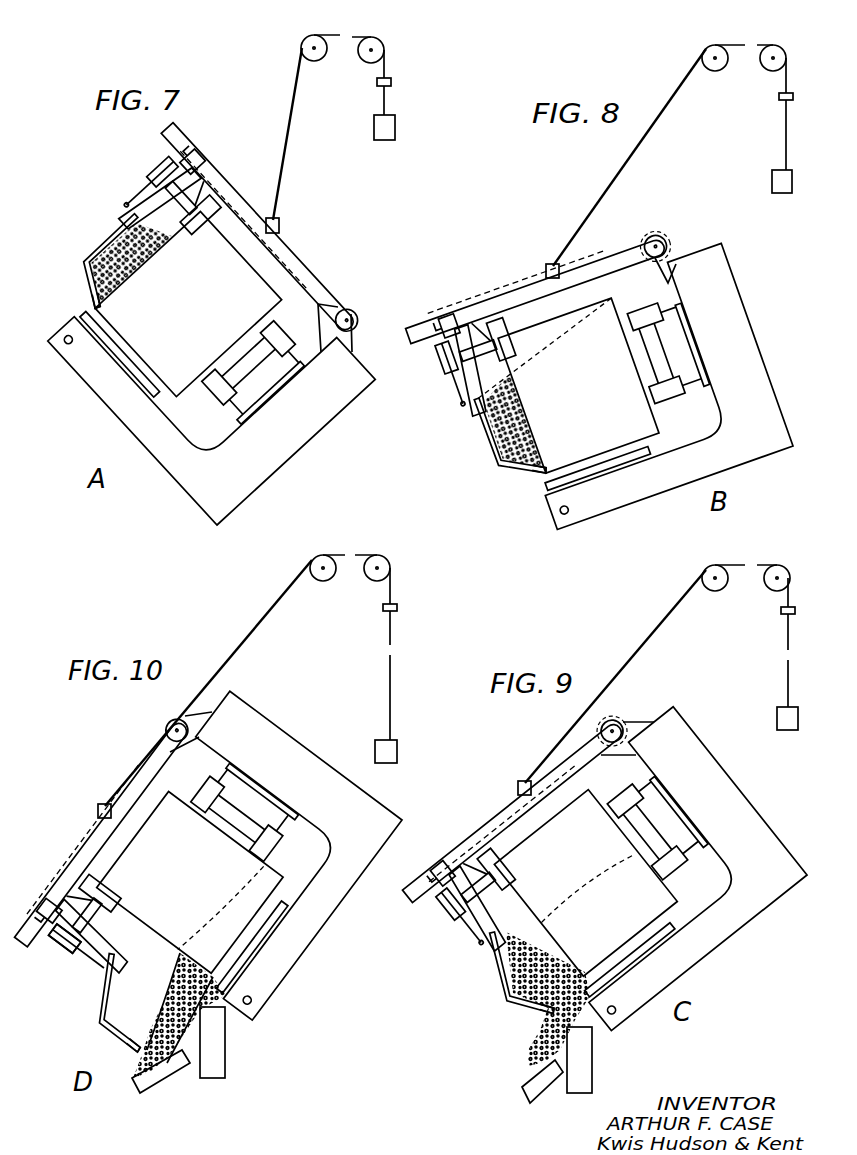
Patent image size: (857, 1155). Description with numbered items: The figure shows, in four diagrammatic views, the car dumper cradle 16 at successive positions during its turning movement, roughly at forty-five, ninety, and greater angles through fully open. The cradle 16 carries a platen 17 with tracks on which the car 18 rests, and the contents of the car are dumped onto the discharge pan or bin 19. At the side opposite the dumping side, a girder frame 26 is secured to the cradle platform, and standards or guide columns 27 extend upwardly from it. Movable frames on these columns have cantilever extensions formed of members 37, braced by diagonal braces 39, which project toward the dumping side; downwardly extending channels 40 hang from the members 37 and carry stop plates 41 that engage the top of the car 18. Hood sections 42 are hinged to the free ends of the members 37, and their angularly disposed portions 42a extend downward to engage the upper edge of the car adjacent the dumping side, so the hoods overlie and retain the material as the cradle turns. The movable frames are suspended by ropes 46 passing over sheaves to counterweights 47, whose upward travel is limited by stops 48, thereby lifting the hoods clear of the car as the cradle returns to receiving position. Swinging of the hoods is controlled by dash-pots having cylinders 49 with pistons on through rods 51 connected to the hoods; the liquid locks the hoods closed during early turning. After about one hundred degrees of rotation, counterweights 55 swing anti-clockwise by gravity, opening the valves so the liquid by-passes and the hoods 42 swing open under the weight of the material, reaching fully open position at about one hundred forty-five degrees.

In FIG. 7, the cradle 16 is at (277, 464).
In FIG. 8, the cradle 16 is at (762, 374).
In FIG. 9, the cradle 16 is at (723, 774).
In FIG. 10, the cradle 16 is at (293, 742).
In FIG. 7, the platen 17 is at (262, 394).
In FIG. 8, the platen 17 is at (687, 350).
In FIG. 9, the platen 17 is at (672, 814).
In FIG. 10, the platen 17 is at (248, 792).
In FIG. 7, the car 18 is at (188, 303).
In FIG. 8, the car 18 is at (560, 392).
In FIG. 9, the discharge pan or bin 19 is at (528, 1097).
In FIG. 10, the discharge pan or bin 19 is at (162, 1078).
In FIG. 7, the girder frame 26 is at (350, 348).
In FIG. 10, the girder frame 26 is at (202, 717).
In FIG. 7, the standards or guide columns 27 is at (298, 261).
In FIG. 9, the standards or guide columns 27 is at (466, 849).
In FIG. 10, the standards or guide columns 27 is at (138, 771).
In FIG. 7, the cantilever extension members 37 is at (173, 191).
In FIG. 9, the cantilever extension members 37 is at (497, 924).
In FIG. 10, the cantilever extension members 37 is at (107, 947).
In FIG. 8, the diagonal braces 39 is at (485, 318).
In FIG. 7, the downwardly extending channels 40 is at (174, 214).
In FIG. 7, the stop plates 41 is at (197, 211).
In FIG. 8, the stop plates 41 is at (498, 328).
In FIG. 9, the stop plates 41 is at (492, 864).
In FIG. 10, the stop plates 41 is at (95, 890).
In FIG. 7, the retarder or hood sections 42 is at (117, 249).
In FIG. 8, the retarder or hood sections 42 is at (493, 437).
In FIG. 9, the retarder or hood sections 42 is at (510, 996).
In FIG. 10, the retarder or hood sections 42 is at (112, 991).
In FIG. 7, the angularly disposed portions 42a is at (94, 293).
In FIG. 8, the angularly disposed portions 42a is at (528, 467).
In FIG. 9, the angularly disposed portions 42a is at (543, 1006).
In FIG. 10, the angularly disposed portions 42a is at (128, 1036).
In FIG. 7, the ropes 46 is at (290, 148).
In FIG. 8, the ropes 46 is at (648, 139).
In FIG. 9, the ropes 46 is at (632, 666).
In FIG. 10, the ropes 46 is at (250, 641).
In FIG. 7, the counterweights 47 is at (397, 134).
In FIG. 8, the counterweights 47 is at (772, 177).
In FIG. 9, the counterweights 47 is at (777, 718).
In FIG. 10, the counterweights 47 is at (376, 747).
In FIG. 7, the stops 48 is at (393, 82).
In FIG. 8, the stops 48 is at (776, 96).
In FIG. 9, the stops 48 is at (778, 611).
In FIG. 10, the stops 48 is at (381, 608).
In FIG. 7, the cylinders 49 is at (158, 163).
In FIG. 8, the cylinders 49 is at (453, 373).
In FIG. 9, the cylinders 49 is at (453, 929).
In FIG. 10, the cylinders 49 is at (82, 953).
In FIG. 7, the through rods 51 is at (128, 200).
In FIG. 8, the through rods 51 is at (472, 400).
In FIG. 9, the through rods 51 is at (492, 950).
In FIG. 7, the counterweights 55 is at (183, 160).
In FIG. 8, the counterweights 55 is at (450, 333).
In FIG. 9, the counterweights 55 is at (441, 903).
In FIG. 10, the counterweights 55 is at (50, 918).